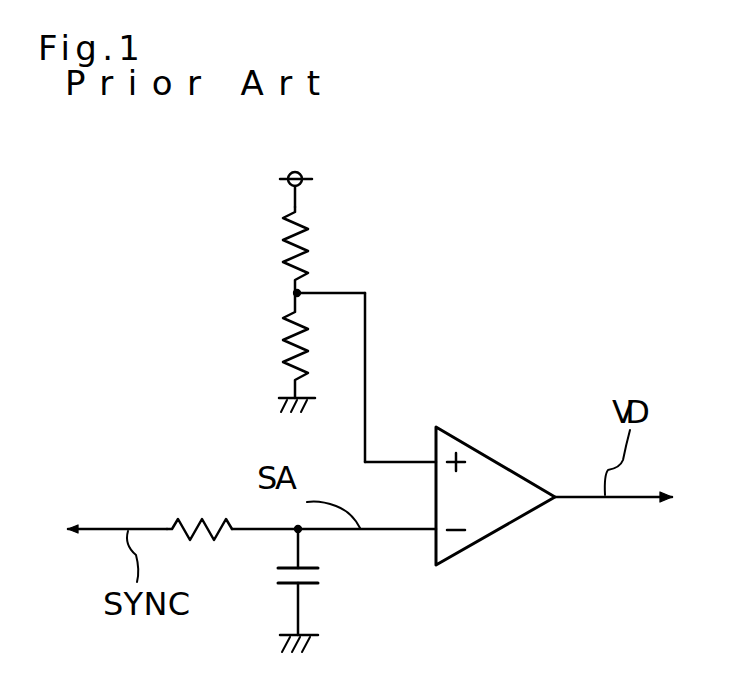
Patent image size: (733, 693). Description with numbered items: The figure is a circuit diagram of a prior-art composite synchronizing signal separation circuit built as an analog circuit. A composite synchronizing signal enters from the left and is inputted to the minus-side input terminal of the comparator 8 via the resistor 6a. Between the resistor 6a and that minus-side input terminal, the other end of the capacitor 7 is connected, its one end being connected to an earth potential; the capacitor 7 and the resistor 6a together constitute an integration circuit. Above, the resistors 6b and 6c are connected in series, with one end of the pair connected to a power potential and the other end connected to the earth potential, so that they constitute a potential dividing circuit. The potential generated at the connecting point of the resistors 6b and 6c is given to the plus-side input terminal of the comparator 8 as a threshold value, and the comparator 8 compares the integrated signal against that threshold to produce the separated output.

The resistor 6a is at (198, 515).
The resistor 6b is at (318, 240).
The resistor 6c is at (280, 354).
The capacitor 7 is at (328, 575).
The comparator 8 is at (505, 525).